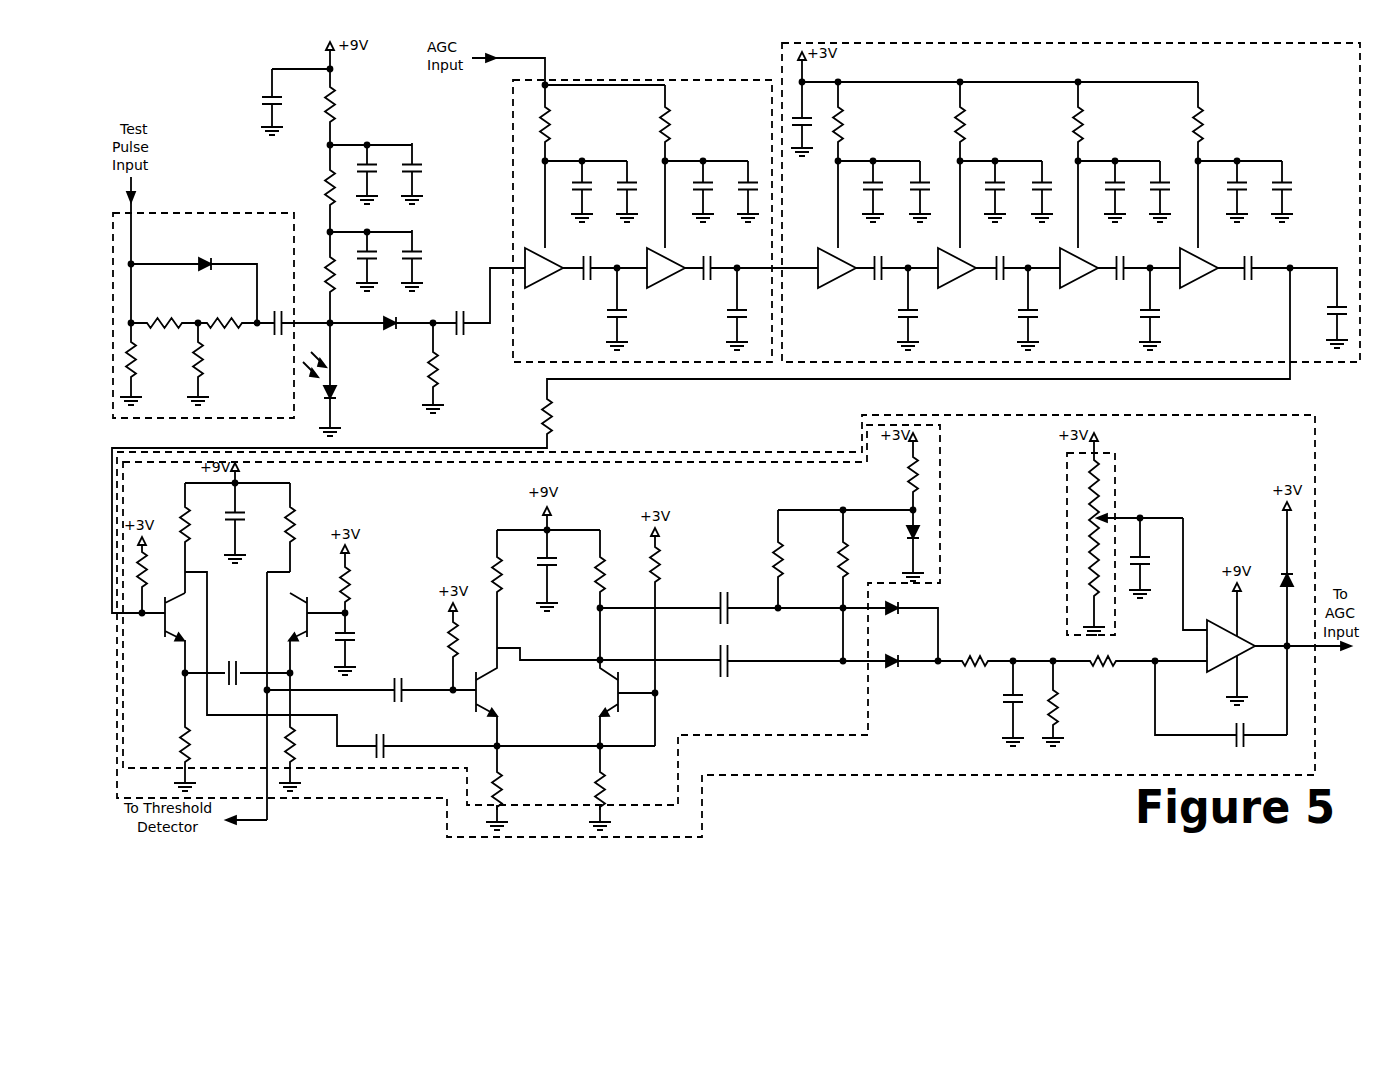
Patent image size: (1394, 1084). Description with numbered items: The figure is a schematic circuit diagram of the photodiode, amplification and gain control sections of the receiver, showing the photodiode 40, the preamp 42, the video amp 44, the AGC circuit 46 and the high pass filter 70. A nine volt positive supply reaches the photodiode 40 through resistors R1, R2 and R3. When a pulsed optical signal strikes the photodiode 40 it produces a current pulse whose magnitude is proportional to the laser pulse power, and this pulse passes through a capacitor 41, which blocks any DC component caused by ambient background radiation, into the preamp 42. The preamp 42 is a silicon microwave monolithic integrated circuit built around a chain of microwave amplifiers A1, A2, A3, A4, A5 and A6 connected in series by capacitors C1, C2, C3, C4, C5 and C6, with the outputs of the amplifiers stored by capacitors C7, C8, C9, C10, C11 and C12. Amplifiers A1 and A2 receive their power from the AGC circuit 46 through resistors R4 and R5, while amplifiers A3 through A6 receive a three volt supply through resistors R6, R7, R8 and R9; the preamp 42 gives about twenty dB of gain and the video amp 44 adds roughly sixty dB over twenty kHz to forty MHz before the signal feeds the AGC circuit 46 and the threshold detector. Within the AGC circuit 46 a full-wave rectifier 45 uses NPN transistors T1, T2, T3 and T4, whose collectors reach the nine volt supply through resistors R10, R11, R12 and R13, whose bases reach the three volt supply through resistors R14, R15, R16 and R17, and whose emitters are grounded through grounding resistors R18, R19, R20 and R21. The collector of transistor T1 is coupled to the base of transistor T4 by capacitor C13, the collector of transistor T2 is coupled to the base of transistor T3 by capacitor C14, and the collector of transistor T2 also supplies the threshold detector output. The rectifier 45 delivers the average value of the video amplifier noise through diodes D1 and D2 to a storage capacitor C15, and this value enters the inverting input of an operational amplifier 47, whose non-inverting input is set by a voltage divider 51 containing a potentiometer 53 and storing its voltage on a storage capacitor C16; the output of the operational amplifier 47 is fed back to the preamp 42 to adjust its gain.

The photodiode 40 is at (338, 396).
The capacitor 41 is at (457, 310).
The preamp 42 is at (512, 148).
The video amp 44 is at (1353, 364).
The full-wave rectifier 45 is at (868, 722).
The AGC circuit 46 is at (1316, 494).
The operational amplifier 47 is at (1222, 664).
The voltage divider 51 is at (1066, 466).
The potentiometer 53 is at (1096, 518).
The high pass filter 70 is at (223, 212).
The resistor R1 is at (336, 112).
The resistor R2 is at (326, 192).
The resistor R3 is at (325, 290).
The resistor R4 is at (550, 122).
The resistor R5 is at (670, 125).
The resistor R6 is at (844, 125).
The resistor R7 is at (966, 125).
The resistor R8 is at (1084, 125).
The resistor R9 is at (1204, 122).
The resistor R10 is at (190, 528).
The resistor R11 is at (295, 530).
The resistor R12 is at (494, 575).
The resistor R13 is at (602, 575).
The resistor R14 is at (148, 582).
The resistor R15 is at (350, 580).
The resistor R16 is at (448, 632).
The resistor R17 is at (660, 573).
The grounding resistor R18 is at (182, 743).
The grounding resistor R19 is at (306, 734).
The grounding resistor R20 is at (500, 789).
The grounding resistor R21 is at (604, 786).
The capacitor C1 is at (582, 260).
The capacitor C2 is at (718, 264).
The capacitor C3 is at (876, 264).
The capacitor C4 is at (1000, 264).
The capacitor C5 is at (1138, 264).
The capacitor C6 is at (1252, 262).
The capacitor C7 is at (610, 319).
The capacitor C8 is at (731, 319).
The capacitor C9 is at (898, 320).
The capacitor C10 is at (1020, 320).
The capacitor C11 is at (1136, 320).
The capacitor C12 is at (1344, 300).
The capacitor C13 is at (387, 735).
The capacitor C14 is at (394, 676).
The storage capacitor C15 is at (1009, 704).
The storage capacitor C16 is at (1152, 568).
The microwave amplifier A1 is at (548, 290).
The microwave amplifier A2 is at (668, 290).
The microwave amplifier A3 is at (840, 290).
The microwave amplifier A4 is at (960, 290).
The microwave amplifier A5 is at (1080, 290).
The microwave amplifier A6 is at (1200, 290).
The NPN transistor T1 is at (168, 642).
The NPN transistor T2 is at (304, 599).
The NPN transistor T3 is at (498, 695).
The NPN transistor T4 is at (613, 691).
The diode D1 is at (898, 615).
The diode D2 is at (899, 662).